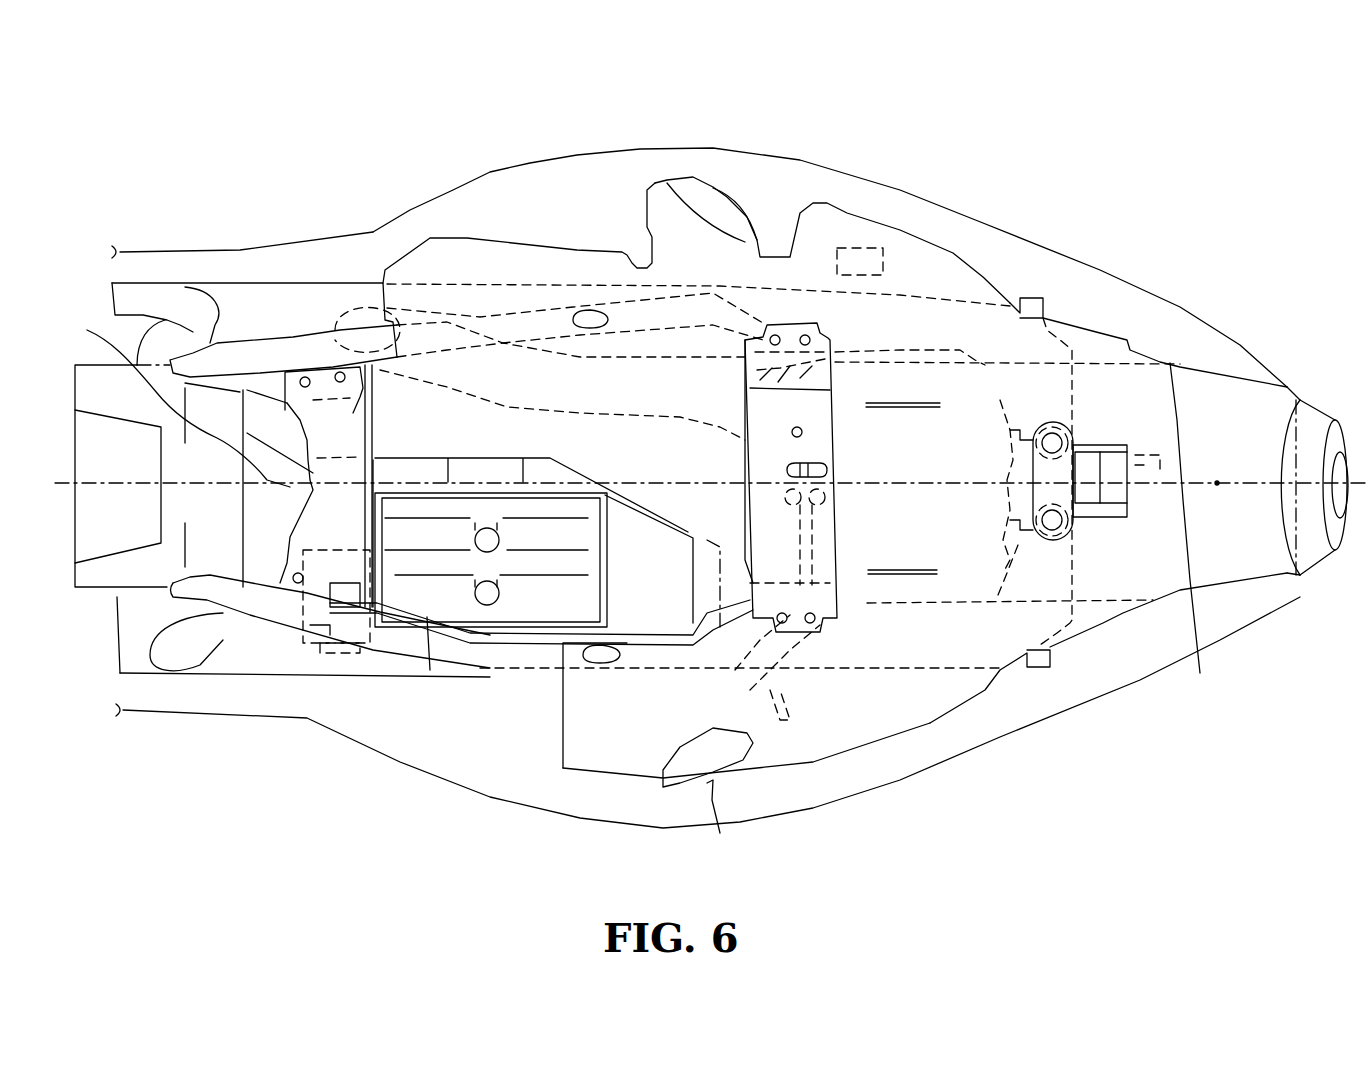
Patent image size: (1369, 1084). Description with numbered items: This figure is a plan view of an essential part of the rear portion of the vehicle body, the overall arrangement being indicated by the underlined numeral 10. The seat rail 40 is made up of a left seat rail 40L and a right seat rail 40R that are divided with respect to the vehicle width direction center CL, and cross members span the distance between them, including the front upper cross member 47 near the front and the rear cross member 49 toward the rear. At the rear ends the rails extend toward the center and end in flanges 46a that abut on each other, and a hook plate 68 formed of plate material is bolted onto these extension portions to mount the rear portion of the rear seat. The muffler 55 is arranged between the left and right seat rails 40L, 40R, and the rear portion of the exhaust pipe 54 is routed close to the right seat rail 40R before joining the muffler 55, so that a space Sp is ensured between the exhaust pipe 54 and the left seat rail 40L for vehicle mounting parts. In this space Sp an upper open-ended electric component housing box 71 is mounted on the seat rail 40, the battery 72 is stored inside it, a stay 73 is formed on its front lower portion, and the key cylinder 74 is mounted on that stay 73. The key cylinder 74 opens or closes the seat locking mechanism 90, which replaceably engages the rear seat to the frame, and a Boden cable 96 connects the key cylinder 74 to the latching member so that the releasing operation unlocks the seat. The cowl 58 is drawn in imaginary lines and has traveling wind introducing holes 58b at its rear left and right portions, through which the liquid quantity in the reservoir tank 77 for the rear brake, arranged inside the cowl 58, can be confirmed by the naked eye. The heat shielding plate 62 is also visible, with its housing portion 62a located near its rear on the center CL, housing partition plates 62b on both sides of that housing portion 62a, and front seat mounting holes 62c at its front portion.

The vehicle body frame assembly 10 is at (200, 203).
The seat rail 40 is at (260, 283).
The right seat rail 40R is at (307, 297).
The left seat rail 40L is at (233, 663).
The front upper cross member 47 is at (127, 357).
The exhaust pipe 54 is at (477, 333).
The cowl 58 is at (562, 155).
The traveling wind introducing hole 58b is at (715, 190).
The front seat mounting hole 62c is at (590, 313).
The reservoir tank 77 is at (858, 250).
The housing partition plate 62b is at (917, 397).
The heat shielding plate 62 is at (1097, 333).
The housing portion 62a is at (950, 505).
The muffler 55 is at (1237, 377).
The rear cross member 49 is at (813, 450).
The flange 46a is at (1140, 480).
The hook plate 68 is at (1110, 493).
The seat locking mechanism 90 is at (820, 527).
The stay 73 is at (298, 645).
The key cylinder 74 is at (345, 657).
The Boden cable 96 is at (428, 640).
The battery 72 is at (517, 613).
The electric component housing box 71 is at (627, 645).
The space Sp is at (663, 497).
The vehicle width direction center CL is at (1280, 570).